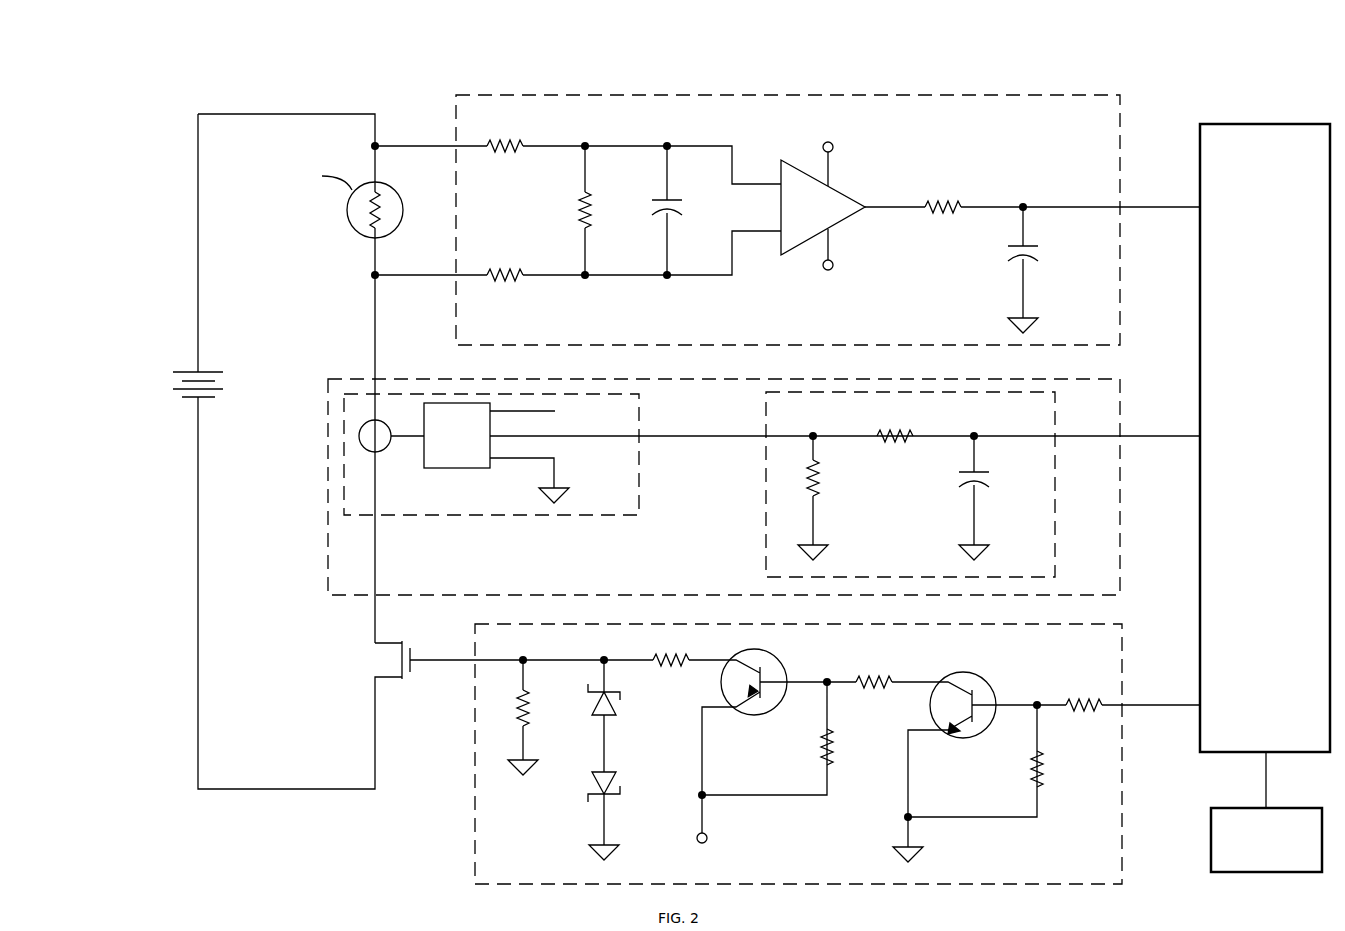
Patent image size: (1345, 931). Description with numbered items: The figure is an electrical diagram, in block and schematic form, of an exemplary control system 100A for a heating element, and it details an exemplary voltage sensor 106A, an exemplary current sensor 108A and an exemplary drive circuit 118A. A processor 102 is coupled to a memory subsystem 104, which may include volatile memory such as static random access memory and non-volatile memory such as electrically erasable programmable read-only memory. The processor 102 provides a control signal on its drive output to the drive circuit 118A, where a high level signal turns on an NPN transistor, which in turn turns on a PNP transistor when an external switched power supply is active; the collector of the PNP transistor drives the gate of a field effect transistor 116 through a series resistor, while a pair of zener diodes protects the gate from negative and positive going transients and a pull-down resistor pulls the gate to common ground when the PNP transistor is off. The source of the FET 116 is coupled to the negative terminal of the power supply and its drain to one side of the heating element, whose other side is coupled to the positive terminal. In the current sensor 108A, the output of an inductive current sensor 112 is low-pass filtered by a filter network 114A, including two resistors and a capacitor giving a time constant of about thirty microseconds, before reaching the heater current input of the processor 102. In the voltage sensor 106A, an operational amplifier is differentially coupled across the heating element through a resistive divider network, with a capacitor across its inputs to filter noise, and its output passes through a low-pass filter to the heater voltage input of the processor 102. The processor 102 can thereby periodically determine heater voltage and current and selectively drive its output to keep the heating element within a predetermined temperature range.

The control system 100A is at (298, 92).
The processor 102 is at (1255, 124).
The memory subsystem 104 is at (1211, 810).
The voltage sensor 106A is at (1120, 95).
The current sensor 108A is at (1120, 379).
The inductive current sensor 112 is at (480, 515).
The filter network 114A is at (766, 500).
The field effect transistor 116 is at (402, 643).
The drive circuit 118A is at (1122, 623).